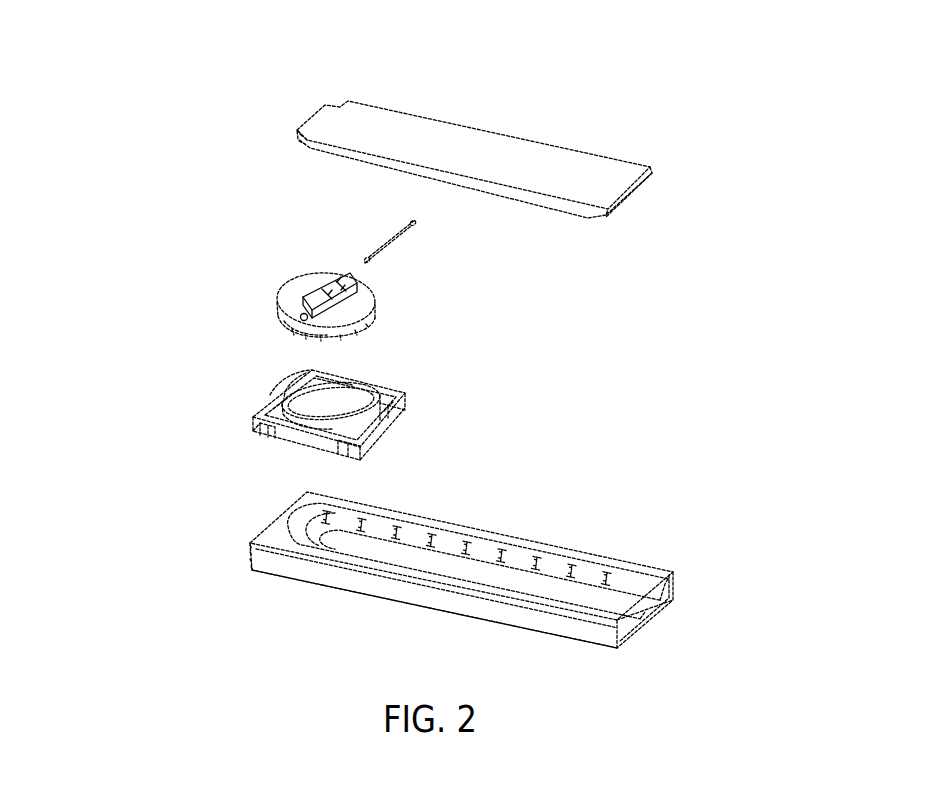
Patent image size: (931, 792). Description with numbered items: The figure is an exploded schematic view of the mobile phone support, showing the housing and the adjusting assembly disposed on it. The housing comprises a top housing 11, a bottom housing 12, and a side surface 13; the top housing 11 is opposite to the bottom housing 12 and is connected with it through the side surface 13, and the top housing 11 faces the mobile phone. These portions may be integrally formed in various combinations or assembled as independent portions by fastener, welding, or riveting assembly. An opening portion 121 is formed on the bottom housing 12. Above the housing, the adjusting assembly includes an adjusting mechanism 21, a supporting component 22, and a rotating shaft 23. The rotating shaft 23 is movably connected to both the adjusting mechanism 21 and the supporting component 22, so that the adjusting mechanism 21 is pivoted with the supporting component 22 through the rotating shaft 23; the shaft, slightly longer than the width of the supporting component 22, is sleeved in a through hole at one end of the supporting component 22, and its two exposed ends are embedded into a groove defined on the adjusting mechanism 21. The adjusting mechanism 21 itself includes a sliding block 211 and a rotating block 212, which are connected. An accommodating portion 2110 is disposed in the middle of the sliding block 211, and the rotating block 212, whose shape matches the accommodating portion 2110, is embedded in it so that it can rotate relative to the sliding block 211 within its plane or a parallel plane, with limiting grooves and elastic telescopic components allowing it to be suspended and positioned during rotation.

The top housing 11 is at (466, 576).
The bottom housing 12 is at (650, 615).
The side surface 13 is at (403, 593).
The opening portion 121 is at (503, 580).
The adjusting mechanism 21 is at (190, 215).
The sliding block 211 is at (371, 393).
The accommodating portion 2110 is at (343, 408).
The rotating block 212 is at (307, 282).
The supporting component 22 is at (405, 142).
The rotating shaft 23 is at (393, 243).